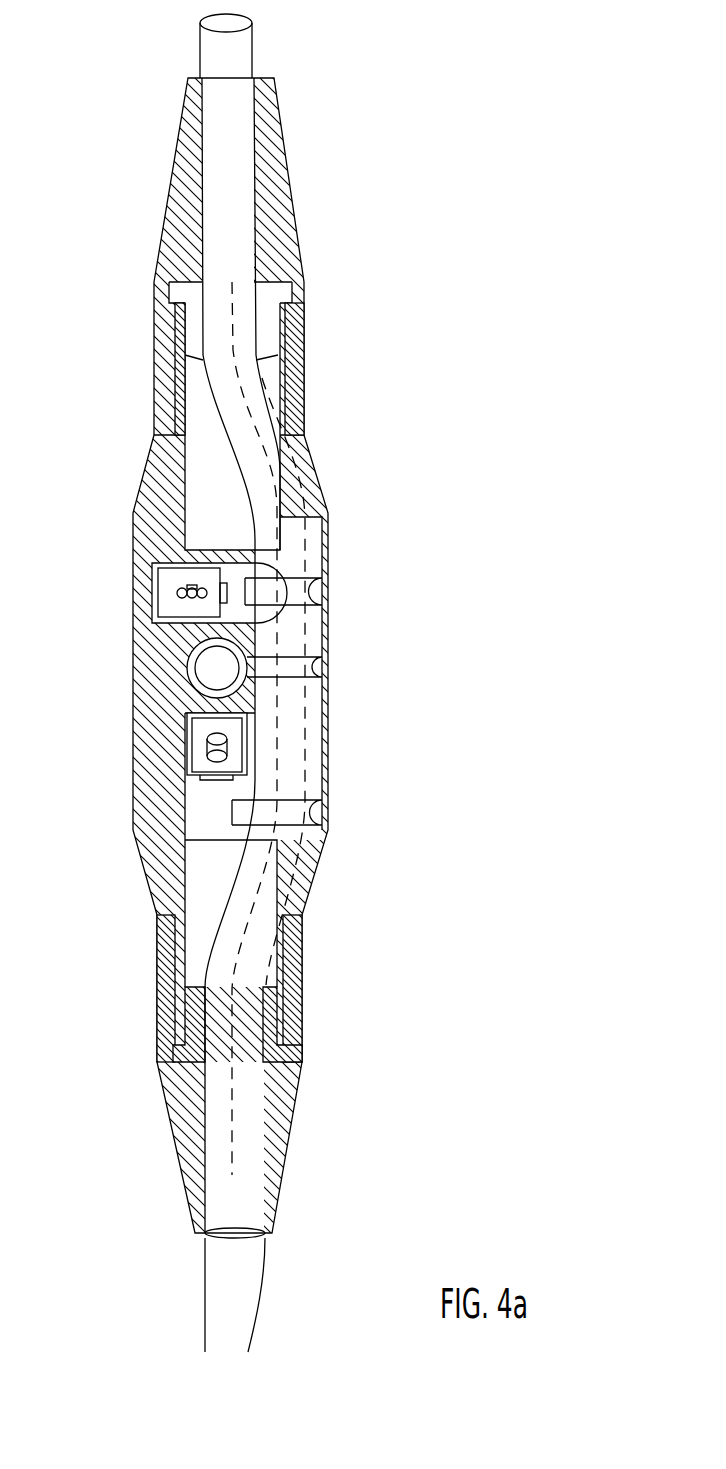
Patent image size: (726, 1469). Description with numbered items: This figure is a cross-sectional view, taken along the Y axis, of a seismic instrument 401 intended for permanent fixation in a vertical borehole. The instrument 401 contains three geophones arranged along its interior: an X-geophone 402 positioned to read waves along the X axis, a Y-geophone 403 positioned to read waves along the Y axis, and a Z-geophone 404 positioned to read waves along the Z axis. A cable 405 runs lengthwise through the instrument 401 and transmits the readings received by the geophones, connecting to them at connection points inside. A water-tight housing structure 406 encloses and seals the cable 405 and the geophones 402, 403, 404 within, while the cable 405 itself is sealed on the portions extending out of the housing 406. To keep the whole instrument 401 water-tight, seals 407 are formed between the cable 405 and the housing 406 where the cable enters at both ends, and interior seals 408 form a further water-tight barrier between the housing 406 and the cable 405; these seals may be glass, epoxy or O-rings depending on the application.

The seismic instrument 401 is at (245, 683).
The X-geophone 402 is at (152, 573).
The Y-geophone 403 is at (193, 672).
The Z-geophone 404 is at (192, 752).
The cable 405 is at (252, 50).
The water-tight housing structure 406 is at (150, 893).
The seals 407 is at (300, 240).
The interior seals 408 is at (293, 297).